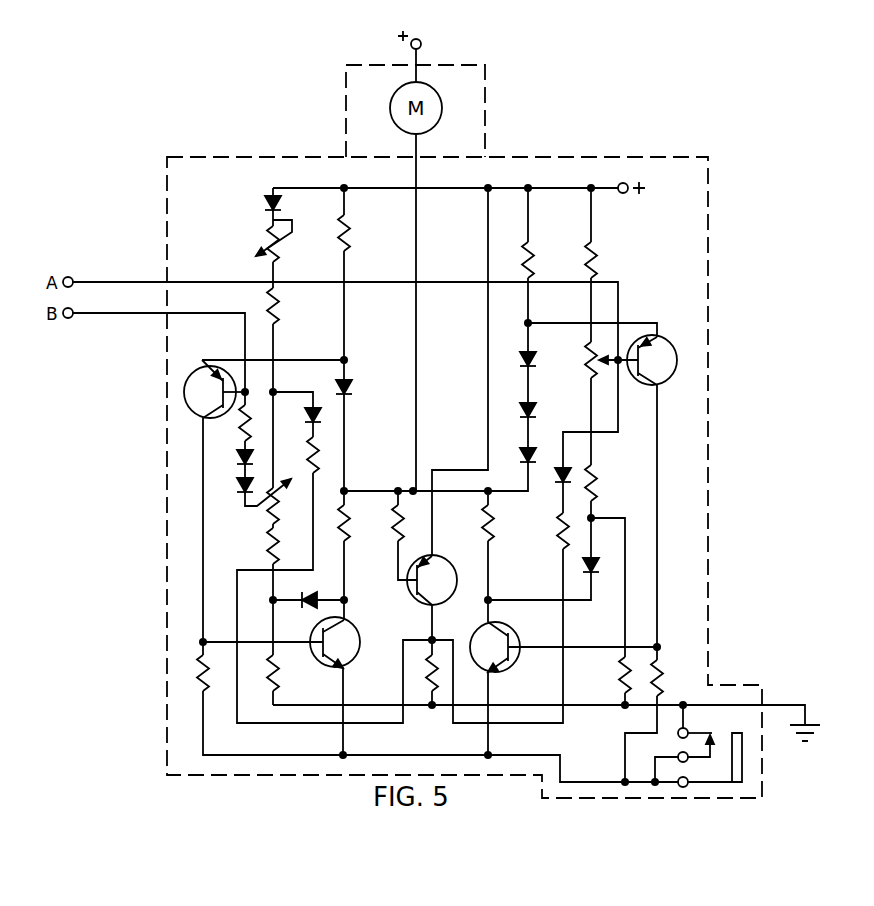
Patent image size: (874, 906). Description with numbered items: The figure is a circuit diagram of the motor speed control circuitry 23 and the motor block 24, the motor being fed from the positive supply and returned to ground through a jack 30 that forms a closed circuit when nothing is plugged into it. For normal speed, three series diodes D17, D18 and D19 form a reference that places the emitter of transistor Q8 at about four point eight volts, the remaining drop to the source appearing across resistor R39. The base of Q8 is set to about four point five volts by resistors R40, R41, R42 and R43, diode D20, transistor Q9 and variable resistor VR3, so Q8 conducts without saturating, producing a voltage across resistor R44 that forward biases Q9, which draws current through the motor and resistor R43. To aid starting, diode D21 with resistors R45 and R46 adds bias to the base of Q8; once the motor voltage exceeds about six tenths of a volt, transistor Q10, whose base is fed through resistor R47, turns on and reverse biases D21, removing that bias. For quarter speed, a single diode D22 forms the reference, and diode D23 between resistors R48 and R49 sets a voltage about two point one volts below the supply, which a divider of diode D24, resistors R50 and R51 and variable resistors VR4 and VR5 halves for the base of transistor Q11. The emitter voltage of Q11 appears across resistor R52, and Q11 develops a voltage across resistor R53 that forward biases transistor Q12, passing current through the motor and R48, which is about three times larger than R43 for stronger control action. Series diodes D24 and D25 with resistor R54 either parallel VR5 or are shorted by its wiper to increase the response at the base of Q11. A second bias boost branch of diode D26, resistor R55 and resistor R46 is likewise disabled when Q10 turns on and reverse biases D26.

The motor speed control circuitry 23 is at (620, 157).
The motor block 24 is at (485, 88).
The jack 30 is at (742, 760).
The transistor Q8 is at (659, 497).
The transistor Q9 is at (563, 688).
The transistor Q10 is at (447, 421).
The transistor Q11 is at (208, 496).
The transistor Q12 is at (298, 683).
The resistor R39 is at (547, 260).
The resistor R40 is at (611, 260).
The resistor R41 is at (611, 483).
The resistor R42 is at (605, 675).
The resistor R43 is at (470, 523).
The resistor R44 is at (674, 678).
The resistor R45 is at (542, 531).
The resistor R46 is at (425, 673).
The resistor R47 is at (394, 537).
The resistor R48 is at (350, 530).
The resistor R49 is at (291, 673).
The resistor R50 is at (297, 306).
The resistor R51 is at (253, 546).
The resistor R52 is at (364, 233).
The resistor R53 is at (192, 670).
The resistor R54 is at (235, 422).
The resistor R55 is at (330, 452).
The variable resistor VR3 is at (593, 366).
The variable resistor VR4 is at (249, 236).
The variable resistor VR5 is at (258, 508).
The diode D17 is at (514, 443).
The diode D18 is at (549, 409).
The diode D19 is at (549, 359).
The diode D20 is at (583, 566).
The diode D21 is at (553, 484).
The diode D22 is at (365, 387).
The diode D23 is at (308, 613).
The diode D24 is at (150, 456).
The diode D25 is at (235, 483).
The diode D26 is at (298, 426).